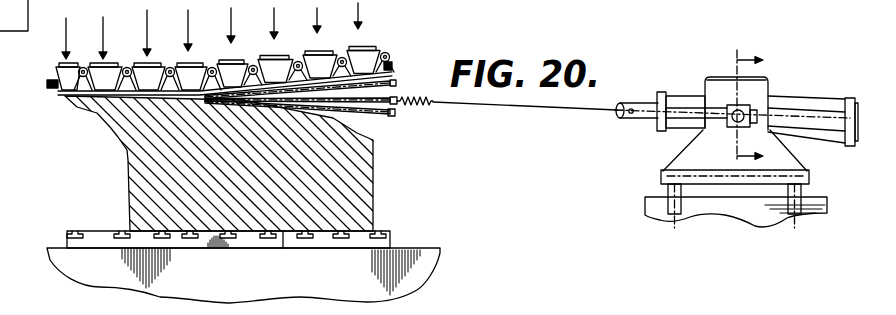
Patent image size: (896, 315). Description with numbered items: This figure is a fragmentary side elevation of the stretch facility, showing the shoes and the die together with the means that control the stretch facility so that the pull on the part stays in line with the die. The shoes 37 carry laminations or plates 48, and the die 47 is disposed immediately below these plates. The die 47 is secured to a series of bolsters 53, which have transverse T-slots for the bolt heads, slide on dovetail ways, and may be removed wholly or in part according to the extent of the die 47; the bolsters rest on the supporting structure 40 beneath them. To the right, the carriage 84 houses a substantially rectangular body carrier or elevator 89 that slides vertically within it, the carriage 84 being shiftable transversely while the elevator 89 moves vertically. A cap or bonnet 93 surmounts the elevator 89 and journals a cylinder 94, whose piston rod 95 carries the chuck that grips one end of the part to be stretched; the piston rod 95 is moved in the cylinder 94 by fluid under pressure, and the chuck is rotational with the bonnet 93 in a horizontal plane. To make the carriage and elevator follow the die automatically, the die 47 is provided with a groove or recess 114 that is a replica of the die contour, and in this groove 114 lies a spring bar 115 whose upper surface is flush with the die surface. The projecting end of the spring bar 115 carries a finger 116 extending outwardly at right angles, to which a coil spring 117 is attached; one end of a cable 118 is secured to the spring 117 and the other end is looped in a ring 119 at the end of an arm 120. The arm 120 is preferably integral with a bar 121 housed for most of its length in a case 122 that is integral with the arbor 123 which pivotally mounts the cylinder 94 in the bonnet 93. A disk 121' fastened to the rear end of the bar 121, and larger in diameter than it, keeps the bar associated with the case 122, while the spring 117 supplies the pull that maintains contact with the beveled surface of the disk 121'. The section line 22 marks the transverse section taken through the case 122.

The shoes 37 is at (70, 72).
The laminations or plates 48 is at (46, 84).
The spring bar 115 is at (368, 98).
The coil spring 117 is at (417, 93).
The finger 116 is at (396, 113).
The groove or recess 114 is at (375, 143).
The die 47 is at (363, 190).
The bolsters 53 is at (392, 245).
The base 40 is at (365, 293).
The cable 118 is at (526, 108).
The ring 119 is at (632, 108).
The piston rod 95 is at (630, 119).
The arm 120 is at (679, 108).
The bar 121 is at (730, 107).
The cap or bonnet 93 is at (757, 76).
The case 122 is at (746, 108).
The arbor 123 is at (768, 94).
The disk 121' is at (778, 118).
The cylinder 94 is at (835, 106).
The body carrier or elevator 89 is at (672, 193).
The carriage 84 is at (813, 203).
The section line 22- 22 is at (726, 103).